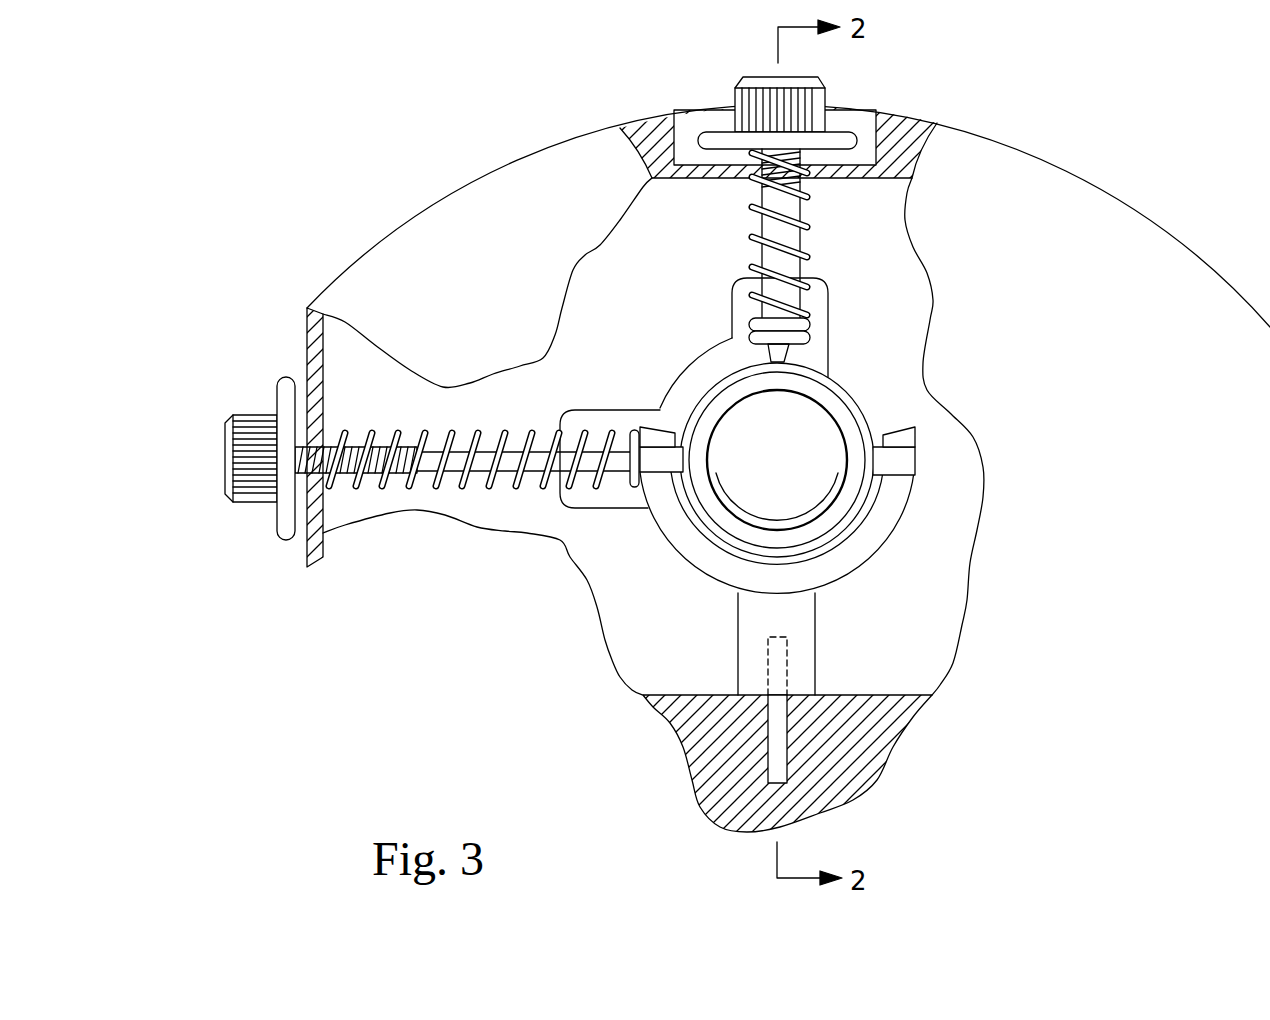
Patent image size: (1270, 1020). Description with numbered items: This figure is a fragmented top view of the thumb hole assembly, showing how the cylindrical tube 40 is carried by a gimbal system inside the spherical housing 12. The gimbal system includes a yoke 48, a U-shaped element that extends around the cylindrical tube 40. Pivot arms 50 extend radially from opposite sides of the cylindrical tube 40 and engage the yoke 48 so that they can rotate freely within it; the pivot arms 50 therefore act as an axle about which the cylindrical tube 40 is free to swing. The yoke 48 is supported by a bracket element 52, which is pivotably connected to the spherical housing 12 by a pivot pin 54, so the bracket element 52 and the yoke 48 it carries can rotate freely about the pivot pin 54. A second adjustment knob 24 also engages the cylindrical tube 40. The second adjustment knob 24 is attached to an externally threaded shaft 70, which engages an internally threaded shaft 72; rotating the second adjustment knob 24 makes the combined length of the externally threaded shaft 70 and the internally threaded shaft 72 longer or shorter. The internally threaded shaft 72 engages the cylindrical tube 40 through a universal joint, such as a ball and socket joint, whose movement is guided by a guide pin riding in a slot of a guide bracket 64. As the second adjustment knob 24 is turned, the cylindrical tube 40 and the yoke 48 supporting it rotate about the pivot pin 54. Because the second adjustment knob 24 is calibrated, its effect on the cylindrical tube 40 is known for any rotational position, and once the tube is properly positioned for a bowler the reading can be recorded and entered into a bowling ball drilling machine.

The spherical housing 12 is at (887, 733).
The second adjustment knob 24 is at (262, 483).
The cylindrical tube 40 is at (853, 393).
The yoke 48 is at (883, 558).
The pivot arms 50 is at (657, 452).
The bracket element 52 is at (815, 630).
The pivot pin 54 is at (783, 733).
The guide bracket 64 is at (714, 352).
The externally threaded shaft 70 is at (350, 443).
The internally threaded shaft 72 is at (485, 545).